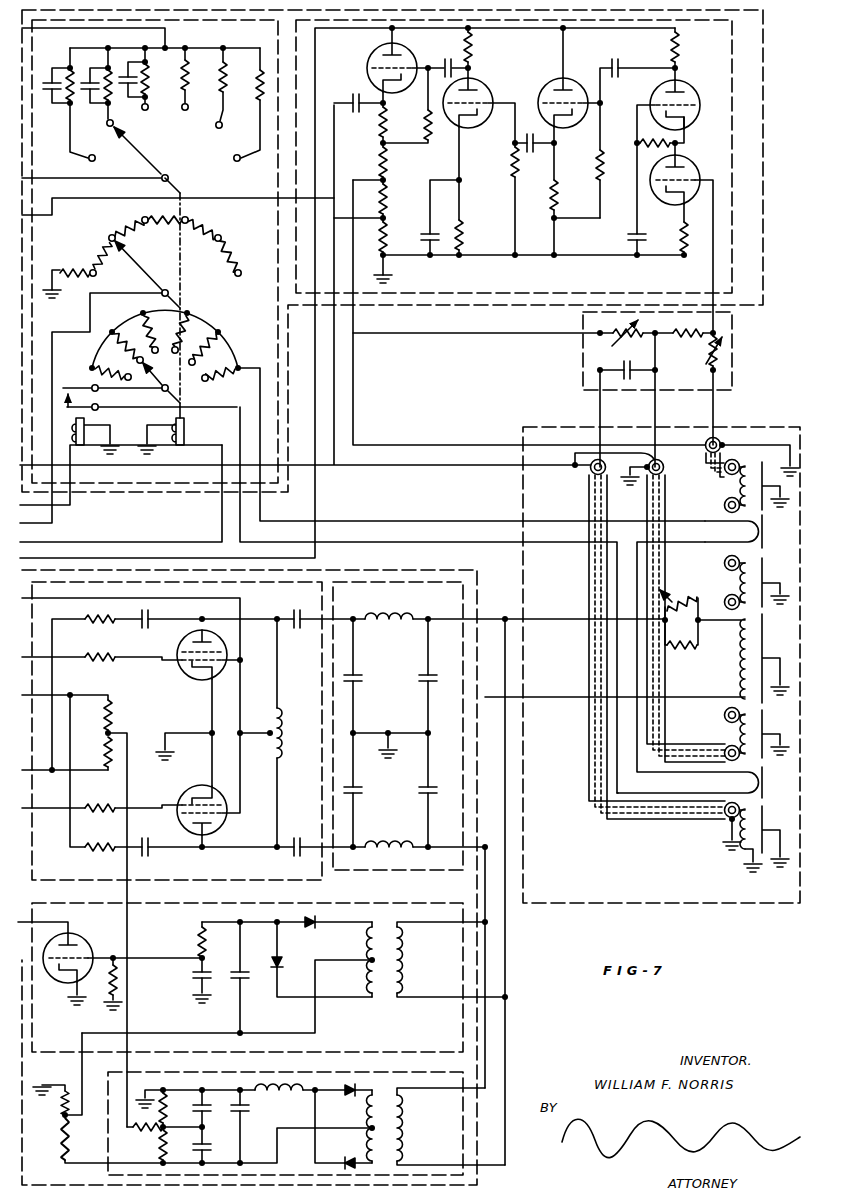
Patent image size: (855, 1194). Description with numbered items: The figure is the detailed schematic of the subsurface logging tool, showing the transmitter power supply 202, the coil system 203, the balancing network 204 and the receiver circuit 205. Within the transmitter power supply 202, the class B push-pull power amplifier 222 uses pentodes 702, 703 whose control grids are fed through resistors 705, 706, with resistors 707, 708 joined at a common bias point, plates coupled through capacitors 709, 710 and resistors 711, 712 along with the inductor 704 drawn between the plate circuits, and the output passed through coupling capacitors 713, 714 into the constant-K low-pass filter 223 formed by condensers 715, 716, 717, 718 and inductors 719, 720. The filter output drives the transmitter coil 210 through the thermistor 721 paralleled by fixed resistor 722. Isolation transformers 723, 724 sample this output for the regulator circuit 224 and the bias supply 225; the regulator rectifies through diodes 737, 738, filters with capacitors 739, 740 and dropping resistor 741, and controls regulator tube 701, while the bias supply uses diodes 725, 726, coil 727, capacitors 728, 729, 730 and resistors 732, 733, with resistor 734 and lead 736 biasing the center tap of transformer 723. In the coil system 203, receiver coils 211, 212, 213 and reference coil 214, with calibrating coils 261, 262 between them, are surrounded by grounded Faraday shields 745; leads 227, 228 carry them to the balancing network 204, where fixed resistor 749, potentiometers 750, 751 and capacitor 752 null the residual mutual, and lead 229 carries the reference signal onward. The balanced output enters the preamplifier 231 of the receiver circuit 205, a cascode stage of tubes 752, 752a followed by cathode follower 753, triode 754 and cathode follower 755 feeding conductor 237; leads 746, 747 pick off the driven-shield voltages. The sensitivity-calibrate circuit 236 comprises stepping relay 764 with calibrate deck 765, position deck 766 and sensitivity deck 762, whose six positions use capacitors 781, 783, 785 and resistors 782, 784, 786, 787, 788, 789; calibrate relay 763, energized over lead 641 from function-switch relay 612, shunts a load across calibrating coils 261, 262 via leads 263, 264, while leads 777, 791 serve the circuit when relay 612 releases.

The receiver circuit 205 is at (766, 230).
The sensitivity-calibrate circuit 236 is at (140, 488).
The preamplifier 231 is at (736, 132).
The balancing network 204 is at (579, 363).
The coil system 203 is at (521, 487).
The transmitter power supply 202 is at (499, 593).
The power amplifier 222 is at (311, 580).
The low-pass constant-K filter 223 is at (460, 562).
The regulator circuit 224 is at (459, 1036).
The bias supply 225 is at (457, 1126).
The sensitivity deck 762 is at (183, 145).
The capacitor 781 is at (50, 68).
The resistor 782 is at (54, 107).
The capacitor 783 is at (90, 70).
The resistor 784 is at (99, 106).
The capacitor 785 is at (122, 98).
The resistor 786 is at (152, 86).
The resistor 787 is at (190, 83).
The resistor 788 is at (228, 96).
The resistor 789 is at (257, 86).
The conductor 237 is at (86, 196).
The position deck 766 is at (142, 254).
The lead 777 is at (48, 524).
The calibrate deck 765 is at (195, 325).
The calibrate relay 763 is at (86, 424).
The stepping switch relay 764 is at (184, 424).
The lead 641 is at (70, 504).
The lead 791 is at (119, 540).
The function switch relay 612 is at (85, 558).
The cathode follower output tube 755 is at (406, 58).
The triode amplifier tube 754 is at (488, 90).
The cathode follower tube 753 is at (580, 80).
The cascode input tube 752 is at (686, 88).
The cascode input tube 752a is at (690, 162).
The lead 229 is at (413, 336).
The variable potentiometer 751 is at (585, 323).
The fixed resistor 749 is at (716, 332).
The variable potentiometer 750 is at (729, 360).
The lead 227 is at (652, 399).
The lead 746 is at (462, 444).
The lead 747 is at (384, 483).
The lead 228 is at (592, 496).
The lead 263 is at (385, 520).
The lead 264 is at (468, 542).
The receiver coil 211 is at (743, 485).
The calibrating coil 261 is at (746, 531).
The receiver coil 212 is at (746, 561).
The transmitter coil 210 is at (761, 628).
The receiver coil 213 is at (742, 737).
The calibrating coil 262 is at (702, 670).
The reference receiver coil 214 is at (751, 848).
The Faraday shields 745 is at (768, 812).
The thermistor 721 is at (686, 583).
The fixed resistor 722 is at (676, 656).
The pentode tube 702 is at (185, 645).
The pentode tube 703 is at (196, 788).
The resistor 711 is at (84, 617).
The capacitor 709 is at (149, 619).
The resistor 705 is at (106, 652).
The resistor 707 is at (112, 706).
The resistor 708 is at (105, 748).
The resistor 706 is at (106, 804).
The resistor 712 is at (112, 843).
The capacitor 710 is at (157, 843).
The inductor 704 is at (274, 731).
The coupling capacitor 713 is at (307, 607).
The coupling capacitor 714 is at (307, 843).
The inductor 719 is at (401, 607).
The inductor 720 is at (401, 839).
The condenser 715 is at (362, 675).
The condenser 716 is at (428, 680).
The condenser 717 is at (362, 788).
The condenser 718 is at (428, 792).
The regulator tube 701 is at (80, 946).
The dropping resistor 741 is at (199, 942).
The filtering capacitor 740 is at (197, 983).
The filtering capacitor 739 is at (242, 958).
The diode 738 is at (321, 959).
The diode 737 is at (313, 921).
The isolation transformer 723 is at (391, 1004).
The lead 736 is at (69, 1080).
The resistor 734 is at (62, 1140).
The resistor 732 is at (145, 1136).
The capacitor 730 is at (190, 1101).
The resistor 733 is at (167, 1154).
The capacitor 728 is at (232, 1109).
The capacitor 729 is at (205, 1146).
The coil 727 is at (289, 1096).
The diode 725 is at (354, 1096).
The diode 726 is at (354, 1159).
The isolation transformer 724 is at (389, 1093).